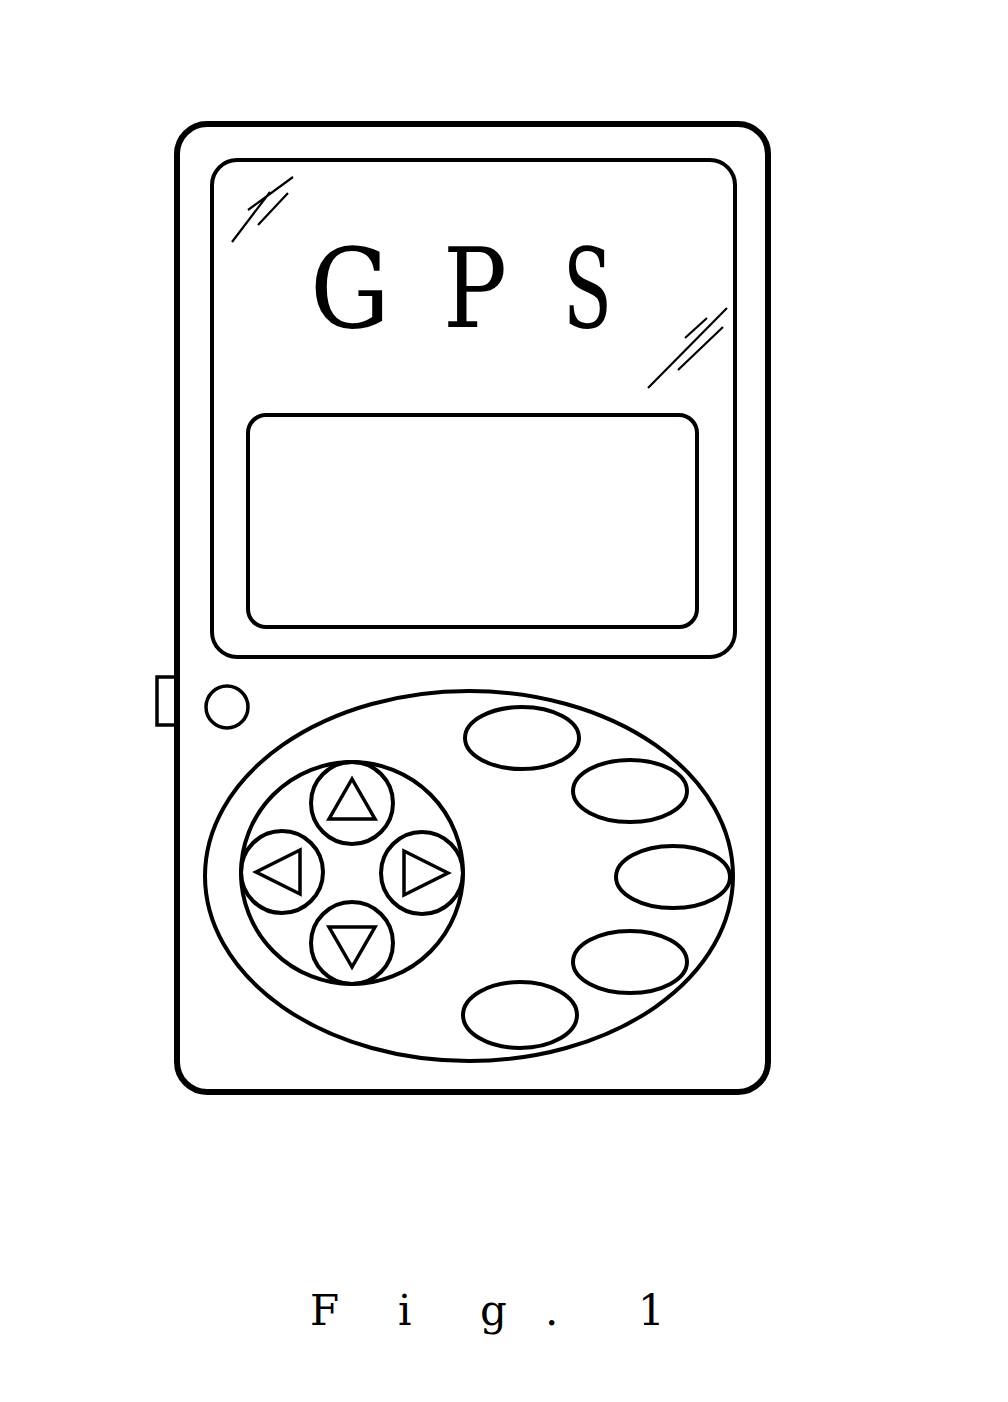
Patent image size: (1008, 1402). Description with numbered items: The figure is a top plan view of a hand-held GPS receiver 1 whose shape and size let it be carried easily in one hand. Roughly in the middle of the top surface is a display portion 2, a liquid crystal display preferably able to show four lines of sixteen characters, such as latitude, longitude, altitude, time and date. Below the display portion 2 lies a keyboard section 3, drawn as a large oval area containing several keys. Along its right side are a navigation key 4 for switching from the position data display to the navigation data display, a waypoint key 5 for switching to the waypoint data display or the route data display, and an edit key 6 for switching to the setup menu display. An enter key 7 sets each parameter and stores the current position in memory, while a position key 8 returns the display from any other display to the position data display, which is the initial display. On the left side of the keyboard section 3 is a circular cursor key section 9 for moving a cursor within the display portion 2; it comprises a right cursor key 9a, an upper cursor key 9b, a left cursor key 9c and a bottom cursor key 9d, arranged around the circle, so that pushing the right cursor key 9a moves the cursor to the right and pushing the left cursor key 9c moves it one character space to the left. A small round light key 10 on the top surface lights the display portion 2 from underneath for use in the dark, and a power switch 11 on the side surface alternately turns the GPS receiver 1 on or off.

The GPS receiver 1 is at (470, 84).
The display portion 2 is at (248, 500).
The keyboard section 3 is at (366, 1066).
The navigation key 4 is at (688, 785).
The waypoint key 5 is at (732, 873).
The edit key 6 is at (688, 955).
The enter key 7 is at (566, 1040).
The position key 8 is at (580, 718).
The cursor key section 9 is at (236, 869).
The right cursor key 9a is at (425, 914).
The upper cursor key 9b is at (312, 796).
The left cursor key 9c is at (323, 914).
The bottom cursor key 9d is at (292, 912).
The light key 10 is at (213, 722).
The power switch 11 is at (157, 690).